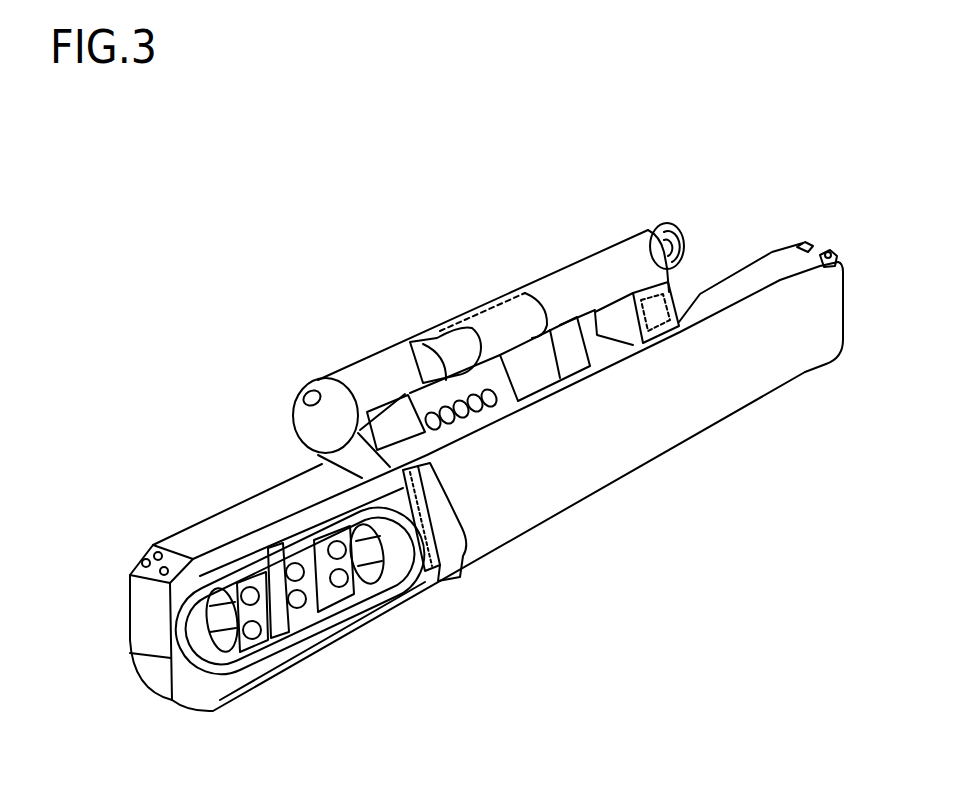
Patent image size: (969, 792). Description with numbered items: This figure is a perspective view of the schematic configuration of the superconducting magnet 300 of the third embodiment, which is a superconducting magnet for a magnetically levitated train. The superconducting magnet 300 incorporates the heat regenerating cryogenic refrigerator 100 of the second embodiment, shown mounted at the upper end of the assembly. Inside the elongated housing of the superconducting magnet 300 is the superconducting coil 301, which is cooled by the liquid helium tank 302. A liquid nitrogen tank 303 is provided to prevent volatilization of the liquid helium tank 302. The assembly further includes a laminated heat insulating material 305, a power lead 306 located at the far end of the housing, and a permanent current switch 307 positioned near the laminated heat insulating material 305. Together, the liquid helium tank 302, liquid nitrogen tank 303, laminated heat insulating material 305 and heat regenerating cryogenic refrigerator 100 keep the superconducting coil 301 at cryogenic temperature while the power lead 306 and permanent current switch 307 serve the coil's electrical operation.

The superconducting magnet 300 is at (212, 321).
The heat regenerating cryogenic refrigerator 100 is at (667, 225).
The superconducting coil 301 is at (268, 648).
The liquid helium tank 302 is at (497, 320).
The liquid nitrogen tank 303 is at (417, 340).
The laminated heat insulating material 305 is at (460, 573).
The power lead 306 is at (805, 246).
The permanent current switch 307 is at (420, 580).